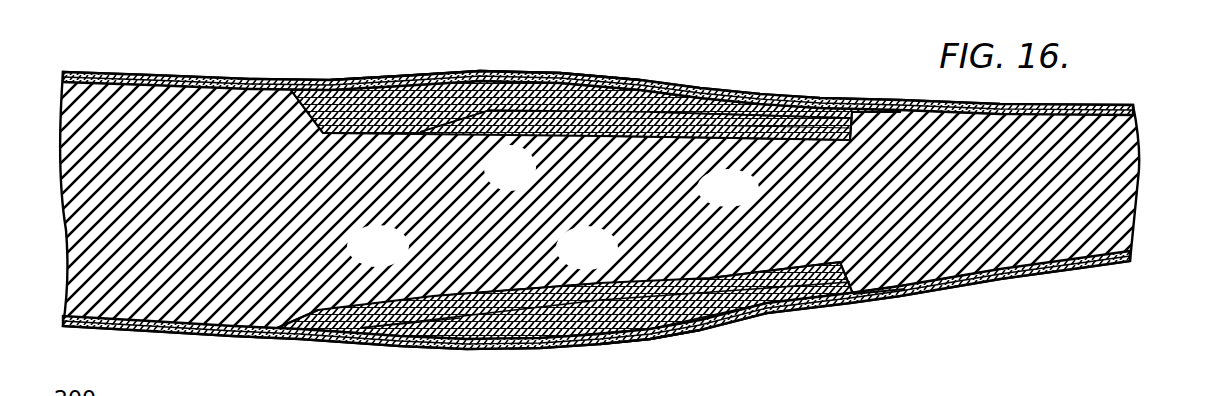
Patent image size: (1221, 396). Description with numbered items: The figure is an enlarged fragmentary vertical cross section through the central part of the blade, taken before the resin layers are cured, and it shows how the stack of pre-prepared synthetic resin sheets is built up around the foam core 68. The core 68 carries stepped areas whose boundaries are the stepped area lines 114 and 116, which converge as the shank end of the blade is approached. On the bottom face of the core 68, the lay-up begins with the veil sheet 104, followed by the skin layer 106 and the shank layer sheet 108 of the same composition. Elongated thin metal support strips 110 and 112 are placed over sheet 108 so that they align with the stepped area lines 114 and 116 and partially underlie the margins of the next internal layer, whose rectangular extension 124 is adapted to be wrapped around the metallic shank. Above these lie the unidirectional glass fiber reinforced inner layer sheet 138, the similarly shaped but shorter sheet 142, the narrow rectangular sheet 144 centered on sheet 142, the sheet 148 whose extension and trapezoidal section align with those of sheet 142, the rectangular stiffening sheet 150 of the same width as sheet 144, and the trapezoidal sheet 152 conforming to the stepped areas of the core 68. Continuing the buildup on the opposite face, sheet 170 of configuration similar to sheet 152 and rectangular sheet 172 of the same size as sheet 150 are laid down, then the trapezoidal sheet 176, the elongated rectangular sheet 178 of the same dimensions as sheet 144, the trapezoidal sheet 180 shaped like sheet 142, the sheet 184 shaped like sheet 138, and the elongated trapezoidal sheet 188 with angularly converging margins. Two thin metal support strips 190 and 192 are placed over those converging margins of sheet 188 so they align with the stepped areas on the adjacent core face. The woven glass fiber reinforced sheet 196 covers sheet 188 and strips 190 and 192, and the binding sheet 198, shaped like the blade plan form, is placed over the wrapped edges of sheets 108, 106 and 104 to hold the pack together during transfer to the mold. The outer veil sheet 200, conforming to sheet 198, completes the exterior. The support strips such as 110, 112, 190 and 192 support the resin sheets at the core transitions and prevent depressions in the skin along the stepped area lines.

The foam core 68 is at (1162, 183).
The veil sheet 104 is at (645, 346).
The skin layer 106 is at (580, 343).
The shank layer sheet 108 is at (643, 343).
The metal support strip 110 is at (277, 83).
The metal support strip 112 is at (840, 100).
The stepped area line 114 is at (902, 106).
The stepped area line 116 is at (290, 87).
The rectangular extension 124 is at (708, 326).
The inner layer sheet 138 is at (748, 323).
The unidirectional glass fiber reinforced sheet 142 is at (773, 316).
The rectangular reinforced sheet 144 is at (493, 330).
The flexible synthetic resin sheet 148 is at (413, 347).
The stiffening sheet 150 is at (628, 286).
The trapezoidally shaped sheet 152 is at (387, 297).
The sheet 170 is at (430, 133).
The rectangular sheet 172 is at (650, 133).
The trapezoidal sheet 176 is at (420, 115).
The elongated rectangular sheet 178 is at (643, 100).
The trapezoidal sheet 180 is at (801, 97).
The unidirectional glass fiber reinforced sheet 184 is at (727, 110).
The trapezoidally shaped sheet 188 is at (690, 95).
The metal support strip 190 is at (278, 345).
The metal support strip 192 is at (863, 312).
The woven glass fiber reinforced sheet 196 is at (590, 73).
The binding sheet 198 is at (520, 75).
The outer veil sheet 200 is at (443, 72).